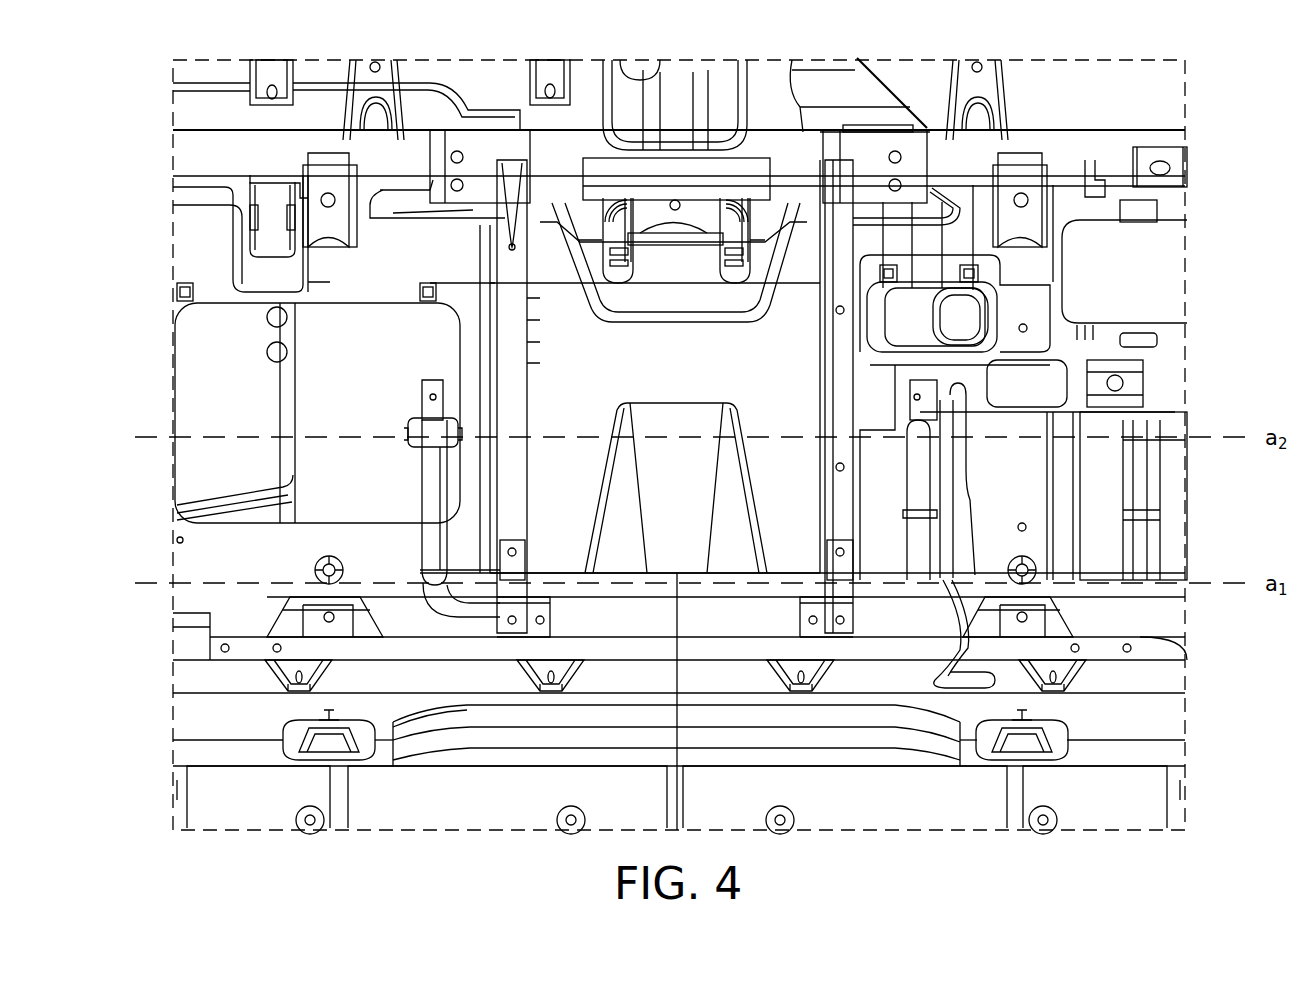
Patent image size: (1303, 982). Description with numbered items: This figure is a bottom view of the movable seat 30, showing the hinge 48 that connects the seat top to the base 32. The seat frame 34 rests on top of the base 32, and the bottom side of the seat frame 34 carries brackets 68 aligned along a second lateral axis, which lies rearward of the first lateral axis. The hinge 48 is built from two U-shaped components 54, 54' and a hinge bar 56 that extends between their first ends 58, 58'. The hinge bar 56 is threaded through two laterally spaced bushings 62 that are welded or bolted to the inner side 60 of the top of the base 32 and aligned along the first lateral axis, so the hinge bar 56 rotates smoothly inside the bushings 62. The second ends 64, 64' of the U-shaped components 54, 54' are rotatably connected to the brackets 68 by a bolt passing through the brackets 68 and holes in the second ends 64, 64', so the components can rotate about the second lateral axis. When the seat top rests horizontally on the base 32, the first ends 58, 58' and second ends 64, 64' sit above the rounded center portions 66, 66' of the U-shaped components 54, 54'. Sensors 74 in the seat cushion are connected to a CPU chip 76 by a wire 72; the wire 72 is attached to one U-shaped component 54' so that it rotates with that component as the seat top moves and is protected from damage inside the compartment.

The movable seat 30 is at (132, 520).
The base 32 is at (1140, 152).
The seat frame 34 is at (367, 410).
The hinge 48 is at (643, 587).
The U-shaped component 54 is at (308, 518).
The U-shaped component 54' is at (1074, 500).
The hinge bar 56 is at (730, 590).
The first end 58 is at (237, 620).
The first end 58' is at (1017, 735).
The inner side 60 is at (572, 494).
The bushing 62 is at (503, 607).
The second end 64 is at (274, 391).
The second end 64' is at (1087, 472).
The rounded center portion 66 is at (281, 482).
The rounded center portion 66' is at (1074, 480).
The bracket 68 is at (433, 380).
The wire 72 is at (947, 465).
The sensor 74 is at (1040, 393).
The CPU chip 76 is at (995, 686).